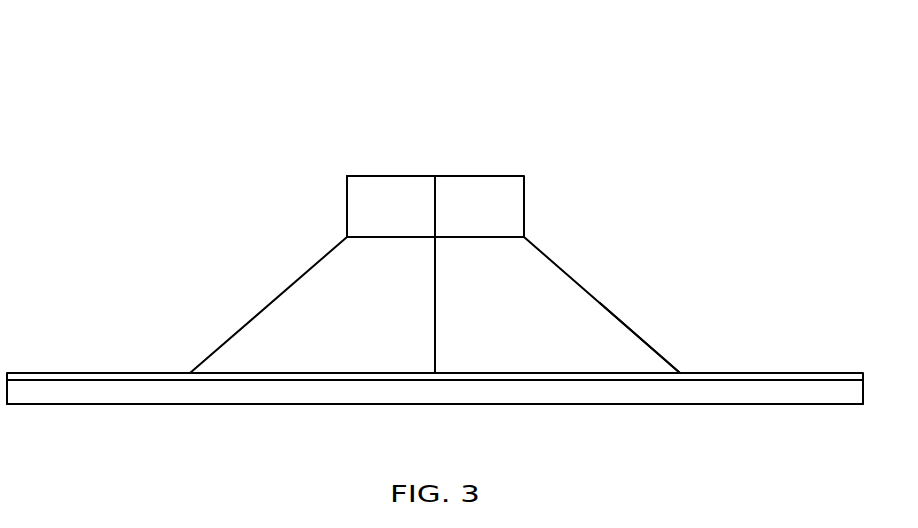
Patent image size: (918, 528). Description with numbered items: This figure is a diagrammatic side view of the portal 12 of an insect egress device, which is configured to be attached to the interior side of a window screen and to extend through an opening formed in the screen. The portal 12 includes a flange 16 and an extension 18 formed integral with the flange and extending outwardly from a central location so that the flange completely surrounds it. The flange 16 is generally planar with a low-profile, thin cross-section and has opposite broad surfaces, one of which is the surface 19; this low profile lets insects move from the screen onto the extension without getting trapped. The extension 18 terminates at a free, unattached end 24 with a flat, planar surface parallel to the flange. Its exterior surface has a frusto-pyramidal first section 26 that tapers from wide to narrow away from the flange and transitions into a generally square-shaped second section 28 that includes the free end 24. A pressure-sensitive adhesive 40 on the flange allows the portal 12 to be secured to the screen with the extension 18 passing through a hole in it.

The portal 12 is at (713, 124).
The flange 16 is at (73, 393).
The extension 18 is at (565, 265).
The broad surface 19 is at (185, 404).
The free end 24 is at (483, 176).
The first section 26 is at (633, 348).
The second section 28 is at (367, 202).
The pressure-sensitive adhesive 40 is at (815, 375).